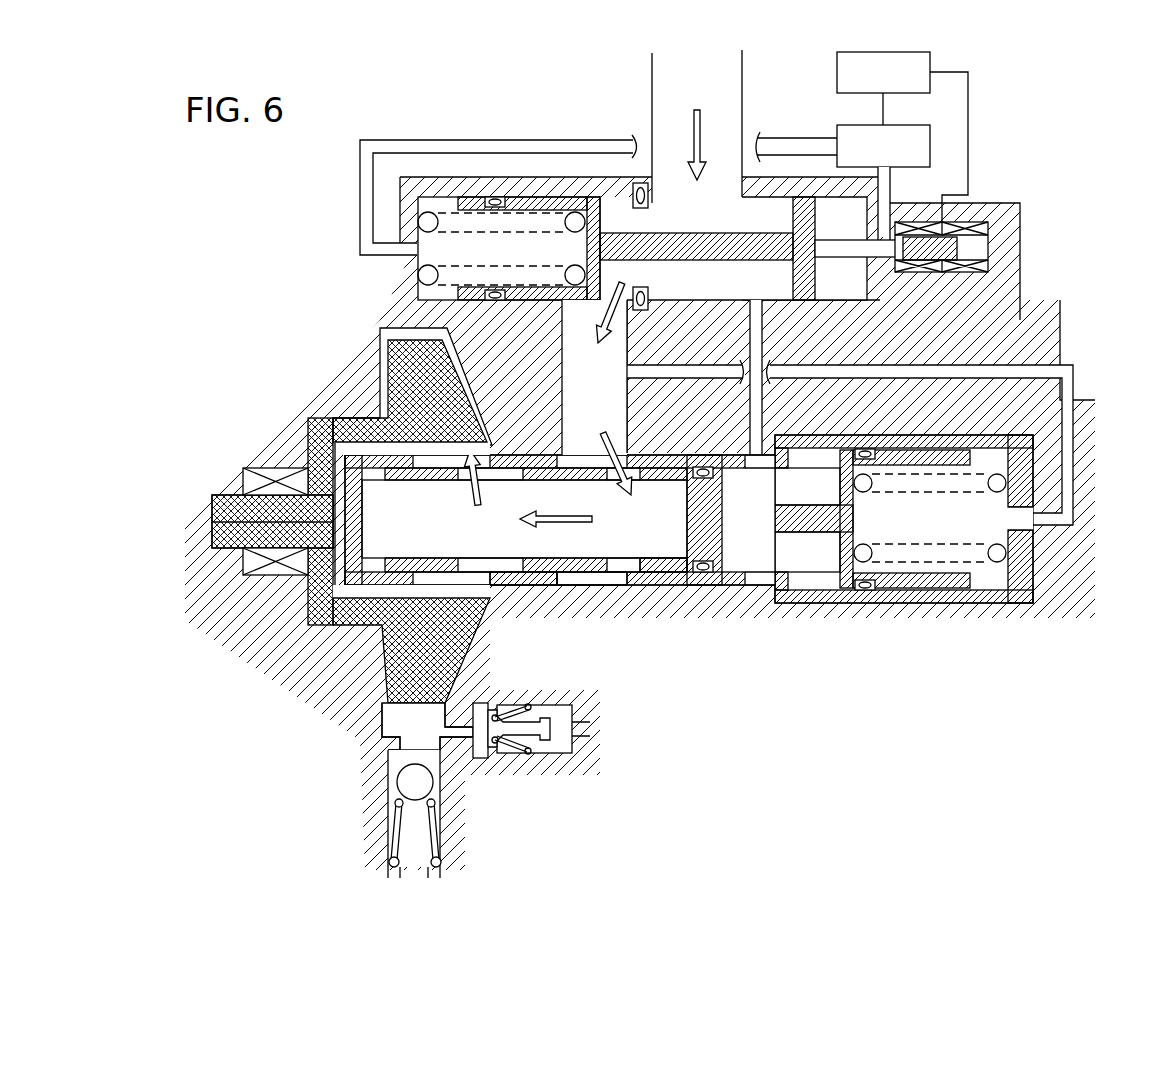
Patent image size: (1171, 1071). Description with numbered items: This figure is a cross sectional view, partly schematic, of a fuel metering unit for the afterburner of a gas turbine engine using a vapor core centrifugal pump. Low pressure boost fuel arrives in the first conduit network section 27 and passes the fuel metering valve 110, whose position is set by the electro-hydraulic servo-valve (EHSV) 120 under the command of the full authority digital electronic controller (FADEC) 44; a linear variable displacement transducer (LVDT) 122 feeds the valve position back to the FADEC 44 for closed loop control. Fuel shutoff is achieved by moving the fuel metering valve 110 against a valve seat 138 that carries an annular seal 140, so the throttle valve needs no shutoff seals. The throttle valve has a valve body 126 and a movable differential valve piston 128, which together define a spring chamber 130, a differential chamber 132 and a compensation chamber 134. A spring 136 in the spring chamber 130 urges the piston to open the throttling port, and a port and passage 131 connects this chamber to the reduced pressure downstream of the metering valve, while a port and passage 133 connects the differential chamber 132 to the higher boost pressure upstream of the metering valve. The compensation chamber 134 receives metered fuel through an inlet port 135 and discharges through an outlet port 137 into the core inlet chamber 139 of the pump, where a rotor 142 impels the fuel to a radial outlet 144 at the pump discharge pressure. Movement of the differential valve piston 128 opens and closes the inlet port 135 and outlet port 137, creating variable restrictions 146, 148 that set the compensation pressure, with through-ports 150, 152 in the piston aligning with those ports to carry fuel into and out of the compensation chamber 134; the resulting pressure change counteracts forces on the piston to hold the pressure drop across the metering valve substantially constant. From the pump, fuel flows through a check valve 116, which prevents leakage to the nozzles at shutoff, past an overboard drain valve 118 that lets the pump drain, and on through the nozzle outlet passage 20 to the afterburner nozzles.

The first conduit network section 27 is at (680, 83).
The annular seal 140 is at (640, 183).
The valve seat 138 is at (636, 183).
The radial outlet 144 is at (417, 327).
The fuel metering valve 110 is at (810, 197).
The electro-hydraulic servo-valve (EHSV) 120 is at (853, 128).
The full authority digital electronic controller (FADEC) 44 is at (837, 56).
The linear variable displacement transducer (LVDT) 122 is at (945, 273).
The port and passage 133 is at (757, 331).
The port and passage 131 is at (1070, 407).
The spring chamber 130 is at (990, 522).
The spring 136 is at (1000, 553).
The valve body 126 is at (1050, 607).
The differential valve piston 128 is at (792, 573).
The differential chamber 132 is at (818, 572).
The compensation chamber 134 is at (600, 540).
The variable restriction 146 is at (615, 573).
The variable restriction 148 is at (512, 570).
The through-port 150 is at (652, 567).
The through-port 152 is at (562, 577).
The inlet port 135 is at (573, 453).
The rotor 142 is at (380, 329).
The core inlet chamber 139 is at (352, 418).
The outlet port 137 is at (345, 626).
The check valve 116 is at (432, 782).
The overboard drain valve 118 is at (538, 728).
The nozzle outlet passage 20 is at (392, 852).